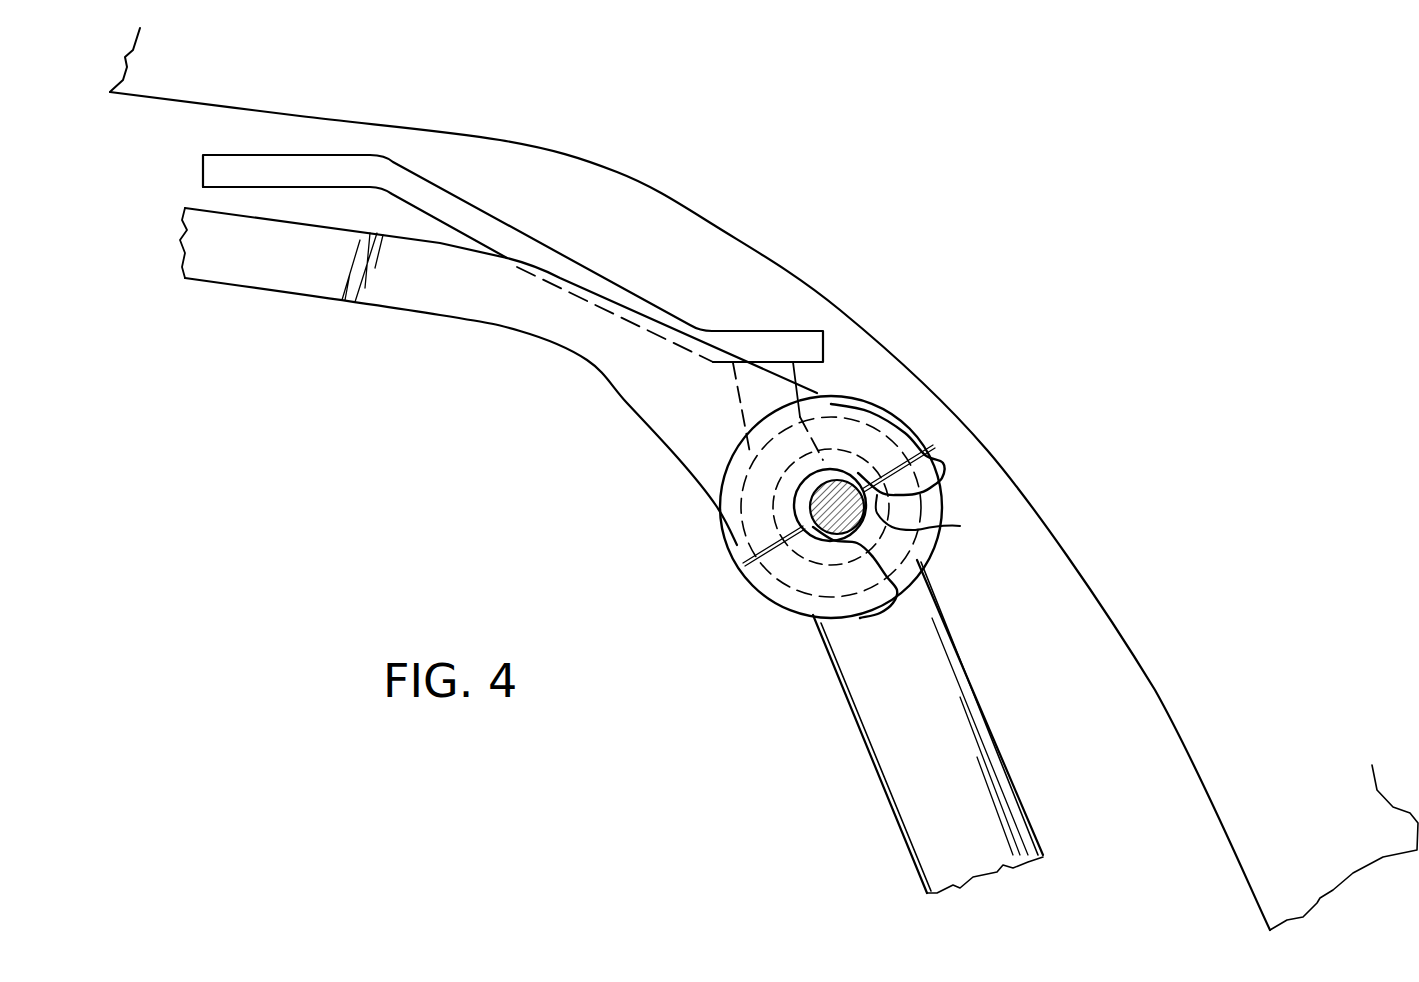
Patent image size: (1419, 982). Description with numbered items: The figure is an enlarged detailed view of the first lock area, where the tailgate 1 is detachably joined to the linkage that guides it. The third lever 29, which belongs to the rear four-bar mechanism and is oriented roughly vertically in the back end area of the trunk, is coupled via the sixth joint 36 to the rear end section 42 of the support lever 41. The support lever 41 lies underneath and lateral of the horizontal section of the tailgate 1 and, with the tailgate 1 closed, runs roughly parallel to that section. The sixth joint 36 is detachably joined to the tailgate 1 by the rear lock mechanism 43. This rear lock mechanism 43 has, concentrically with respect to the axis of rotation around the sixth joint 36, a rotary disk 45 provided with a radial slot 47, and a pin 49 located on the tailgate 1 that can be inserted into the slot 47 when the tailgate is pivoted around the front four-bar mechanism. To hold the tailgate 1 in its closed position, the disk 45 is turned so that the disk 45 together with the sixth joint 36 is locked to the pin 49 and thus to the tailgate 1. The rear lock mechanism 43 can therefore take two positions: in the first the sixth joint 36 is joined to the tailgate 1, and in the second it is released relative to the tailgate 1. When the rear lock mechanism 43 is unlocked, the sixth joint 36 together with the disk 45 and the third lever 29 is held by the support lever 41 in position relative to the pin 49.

The tailgate 1 is at (1233, 715).
The third lever 29 is at (913, 775).
The sixth joint 36 is at (818, 551).
The support lever 41 is at (427, 292).
The rear end section 42 is at (717, 443).
The rear lock mechanism 43 is at (908, 416).
The rotary disk 45 is at (762, 578).
The radial slot 47 is at (960, 526).
The pin 49 is at (806, 514).